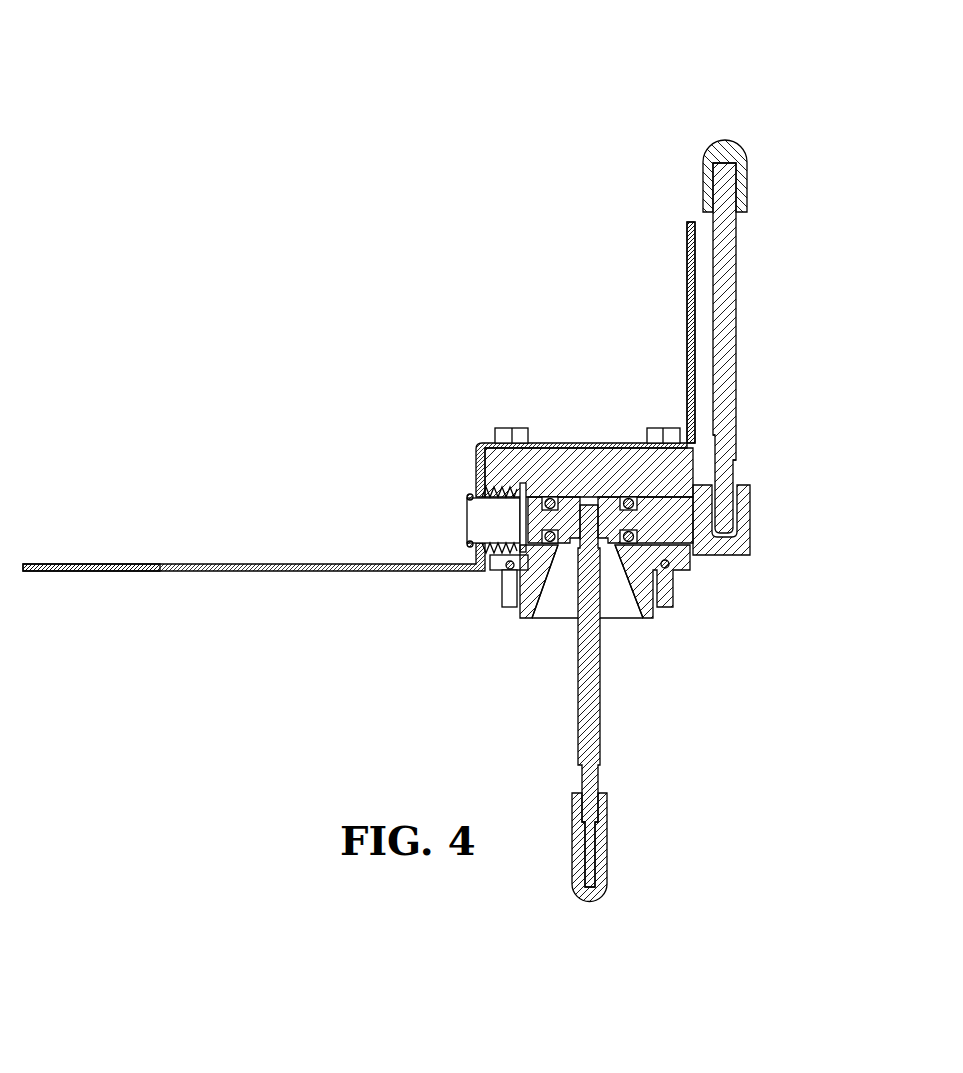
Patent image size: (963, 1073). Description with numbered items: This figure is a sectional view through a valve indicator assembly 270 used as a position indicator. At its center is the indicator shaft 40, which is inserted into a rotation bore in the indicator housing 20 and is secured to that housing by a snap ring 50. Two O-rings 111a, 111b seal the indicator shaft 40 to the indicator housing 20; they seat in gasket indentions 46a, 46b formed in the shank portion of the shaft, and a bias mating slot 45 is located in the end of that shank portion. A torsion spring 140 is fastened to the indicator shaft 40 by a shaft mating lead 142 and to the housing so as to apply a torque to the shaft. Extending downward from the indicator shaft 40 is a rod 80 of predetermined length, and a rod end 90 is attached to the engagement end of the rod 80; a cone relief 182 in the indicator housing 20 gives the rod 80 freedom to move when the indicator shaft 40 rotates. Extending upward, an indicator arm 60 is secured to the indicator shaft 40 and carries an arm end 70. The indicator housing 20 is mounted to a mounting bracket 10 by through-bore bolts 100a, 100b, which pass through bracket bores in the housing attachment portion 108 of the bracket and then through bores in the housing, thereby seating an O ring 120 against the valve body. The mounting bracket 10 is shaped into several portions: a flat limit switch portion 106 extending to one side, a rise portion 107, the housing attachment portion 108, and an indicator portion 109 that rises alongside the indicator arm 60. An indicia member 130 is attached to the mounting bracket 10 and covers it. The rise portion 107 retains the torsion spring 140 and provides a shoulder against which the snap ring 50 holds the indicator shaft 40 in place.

The valve indicator assembly 270 is at (680, 64).
The arm end 70 is at (742, 138).
The indicia member 130 is at (687, 226).
The indicator arm 60 is at (737, 395).
The indicator portion 109 is at (697, 407).
The indicator shaft 40 is at (751, 513).
The torsion spring 140 is at (490, 443).
The shaft mating lead 142 is at (522, 485).
The through-bore bolt 100a is at (523, 428).
The housing attachment portion 108 is at (610, 440).
The through-bore bolt 100b is at (673, 428).
The O-ring 111a is at (550, 497).
The O-ring 111b is at (628, 497).
The rise portion 107 is at (476, 470).
The snap ring 50 is at (470, 496).
The mounting bracket 10 is at (225, 563).
The limit switch portion 106 is at (160, 573).
The bias mating slot 45 is at (470, 547).
The gasket indention 46a is at (508, 570).
The cone relief 182 is at (567, 605).
The indicator housing 20 is at (652, 612).
The gasket indention 46b is at (636, 538).
The O ring 120 is at (667, 570).
The rod 80 is at (600, 740).
The rod end 90 is at (608, 832).